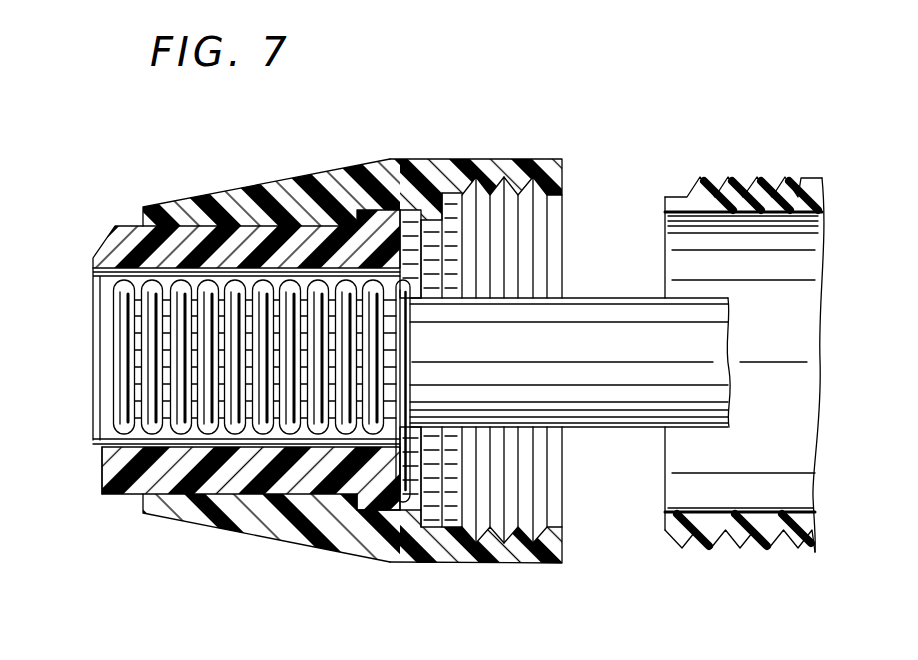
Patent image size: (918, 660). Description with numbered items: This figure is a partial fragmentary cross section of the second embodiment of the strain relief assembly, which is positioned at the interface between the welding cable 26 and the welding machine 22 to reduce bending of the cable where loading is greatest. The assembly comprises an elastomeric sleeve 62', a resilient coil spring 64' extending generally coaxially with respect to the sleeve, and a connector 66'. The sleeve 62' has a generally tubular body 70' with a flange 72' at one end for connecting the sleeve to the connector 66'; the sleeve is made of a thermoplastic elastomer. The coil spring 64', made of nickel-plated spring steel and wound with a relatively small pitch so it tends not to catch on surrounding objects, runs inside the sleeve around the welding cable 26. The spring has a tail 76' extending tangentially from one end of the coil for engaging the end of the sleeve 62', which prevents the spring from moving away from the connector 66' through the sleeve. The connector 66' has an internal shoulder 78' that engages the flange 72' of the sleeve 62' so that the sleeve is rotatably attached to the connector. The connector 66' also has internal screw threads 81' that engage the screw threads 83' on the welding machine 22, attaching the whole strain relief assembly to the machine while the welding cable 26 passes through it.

The elastomeric sleeve 62' is at (254, 335).
The flange 72' is at (246, 188).
The tubular body 70' is at (231, 527).
The connector 66' is at (476, 326).
The resilient coil spring 64' is at (212, 381).
The tail 76' is at (421, 421).
The internal shoulder 78' is at (347, 571).
The internal screw threads 81' is at (542, 574).
The screw threads 83' is at (740, 571).
The welding machine 22 is at (816, 170).
The welding cable 26 is at (730, 352).